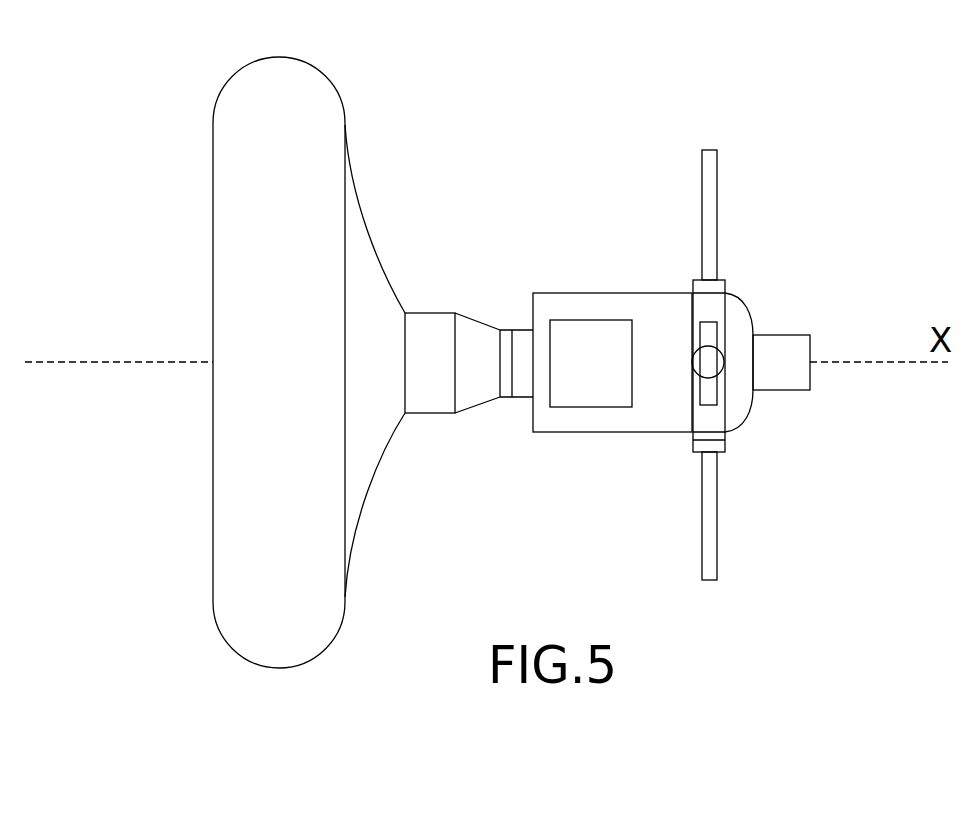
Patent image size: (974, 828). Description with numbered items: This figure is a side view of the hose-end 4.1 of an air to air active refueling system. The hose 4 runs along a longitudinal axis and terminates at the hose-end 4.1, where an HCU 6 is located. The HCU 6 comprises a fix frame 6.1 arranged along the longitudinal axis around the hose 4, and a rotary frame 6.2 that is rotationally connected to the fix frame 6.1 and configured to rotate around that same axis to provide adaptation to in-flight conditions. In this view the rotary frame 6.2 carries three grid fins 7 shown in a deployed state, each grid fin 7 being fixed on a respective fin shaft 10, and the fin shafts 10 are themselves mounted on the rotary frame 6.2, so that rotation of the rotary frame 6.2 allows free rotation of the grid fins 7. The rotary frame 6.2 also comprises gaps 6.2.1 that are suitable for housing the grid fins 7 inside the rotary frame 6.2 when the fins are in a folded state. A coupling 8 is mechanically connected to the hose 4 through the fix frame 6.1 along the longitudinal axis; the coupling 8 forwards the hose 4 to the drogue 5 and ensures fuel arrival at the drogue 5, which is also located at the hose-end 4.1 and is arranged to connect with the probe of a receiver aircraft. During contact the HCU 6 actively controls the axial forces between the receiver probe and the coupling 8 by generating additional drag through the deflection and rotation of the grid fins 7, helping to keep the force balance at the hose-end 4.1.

The hose 4 is at (792, 345).
The hose-end 4.1 is at (770, 138).
The drogue 5 is at (225, 162).
The HCU 6 is at (610, 165).
The fix frame 6.1 is at (501, 398).
The rotary frame 6.2 is at (633, 293).
The gap 6.2.1 is at (600, 392).
The grid fin 7 is at (717, 190).
The coupling 8 is at (470, 327).
The fin shaft 10 is at (701, 245).